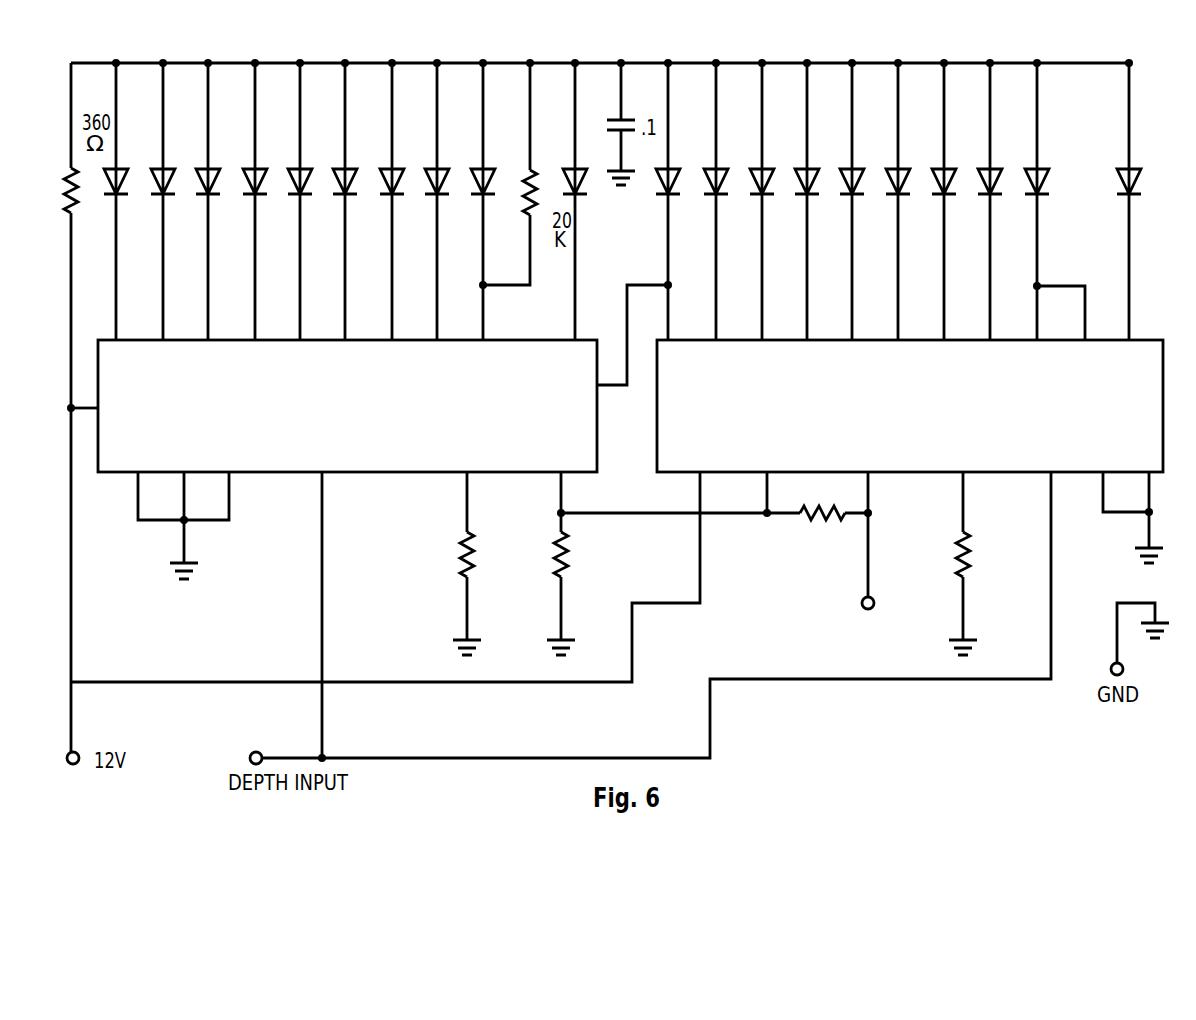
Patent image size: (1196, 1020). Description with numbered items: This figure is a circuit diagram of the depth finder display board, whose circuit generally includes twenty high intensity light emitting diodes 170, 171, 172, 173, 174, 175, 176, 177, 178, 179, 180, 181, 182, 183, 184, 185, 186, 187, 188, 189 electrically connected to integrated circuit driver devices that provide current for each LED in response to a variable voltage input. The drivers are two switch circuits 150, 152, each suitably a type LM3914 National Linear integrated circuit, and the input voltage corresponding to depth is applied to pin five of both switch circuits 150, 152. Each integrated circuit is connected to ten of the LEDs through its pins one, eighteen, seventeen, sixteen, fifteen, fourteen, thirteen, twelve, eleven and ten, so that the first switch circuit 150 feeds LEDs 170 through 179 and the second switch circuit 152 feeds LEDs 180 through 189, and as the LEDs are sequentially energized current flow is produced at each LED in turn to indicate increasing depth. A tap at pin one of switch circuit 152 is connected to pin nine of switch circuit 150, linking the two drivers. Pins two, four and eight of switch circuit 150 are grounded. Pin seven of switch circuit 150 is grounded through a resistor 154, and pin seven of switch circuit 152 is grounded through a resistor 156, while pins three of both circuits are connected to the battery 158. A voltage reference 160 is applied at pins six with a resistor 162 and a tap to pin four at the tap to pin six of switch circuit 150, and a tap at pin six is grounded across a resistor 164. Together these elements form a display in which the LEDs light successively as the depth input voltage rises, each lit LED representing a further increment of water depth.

The switch circuit 150 is at (268, 476).
The switch circuit 152 is at (904, 476).
The resistor 154 is at (471, 540).
The resistor 156 is at (972, 550).
The battery 158 is at (78, 763).
The voltage reference 160 is at (861, 603).
The resistor 162 is at (803, 504).
The resistor 164 is at (568, 562).
The light emitting diode 170 is at (119, 170).
The light emitting diode 171 is at (166, 170).
The light emitting diode 172 is at (211, 170).
The light emitting diode 173 is at (258, 170).
The light emitting diode 174 is at (303, 170).
The light emitting diode 175 is at (348, 170).
The light emitting diode 176 is at (395, 170).
The light emitting diode 177 is at (440, 170).
The light emitting diode 178 is at (486, 170).
The light emitting diode 179 is at (578, 170).
The light emitting diode 180 is at (671, 170).
The light emitting diode 181 is at (719, 170).
The light emitting diode 182 is at (765, 170).
The light emitting diode 183 is at (810, 170).
The light emitting diode 184 is at (855, 170).
The light emitting diode 185 is at (901, 170).
The light emitting diode 186 is at (947, 170).
The light emitting diode 187 is at (993, 170).
The light emitting diode 188 is at (1040, 170).
The light emitting diode 189 is at (1132, 170).